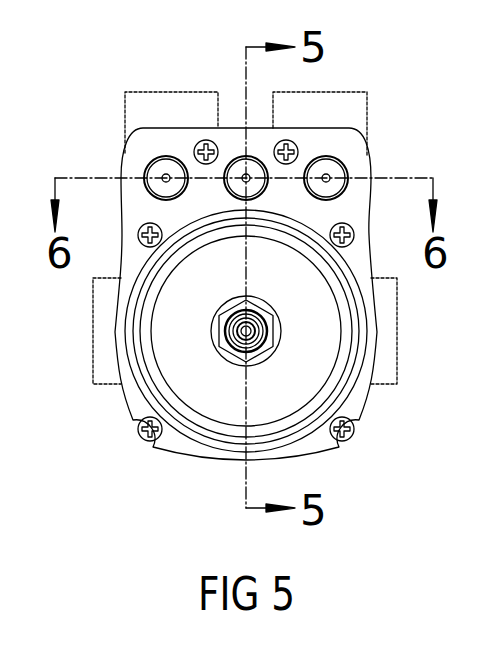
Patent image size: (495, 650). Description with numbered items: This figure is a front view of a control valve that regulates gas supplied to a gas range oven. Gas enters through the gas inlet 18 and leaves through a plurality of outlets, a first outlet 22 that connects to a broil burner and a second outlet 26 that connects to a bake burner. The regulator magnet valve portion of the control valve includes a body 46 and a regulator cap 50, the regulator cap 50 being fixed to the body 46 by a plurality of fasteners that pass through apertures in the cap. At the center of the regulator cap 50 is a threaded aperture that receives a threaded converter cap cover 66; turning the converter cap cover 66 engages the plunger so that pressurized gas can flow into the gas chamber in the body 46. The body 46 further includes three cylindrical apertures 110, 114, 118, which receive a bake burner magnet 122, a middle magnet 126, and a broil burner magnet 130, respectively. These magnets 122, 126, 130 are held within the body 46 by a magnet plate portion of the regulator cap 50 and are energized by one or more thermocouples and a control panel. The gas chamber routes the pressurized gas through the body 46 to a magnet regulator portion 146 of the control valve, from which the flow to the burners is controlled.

The gas inlet 18 is at (93, 331).
The first outlet 22 is at (182, 98).
The second outlet 26 is at (356, 102).
The body 46 is at (108, 461).
The regulator cap 50 is at (357, 397).
The converter cap cover 66 is at (268, 345).
The cylindrical aperture 110 is at (338, 158).
The cylindrical aperture 114 is at (233, 160).
The cylindrical aperture 118 is at (150, 163).
The bake burner magnet 122 is at (330, 184).
The middle magnet 126 is at (242, 156).
The broil burner magnet 130 is at (158, 190).
The magnet regulator portion 146 is at (358, 165).